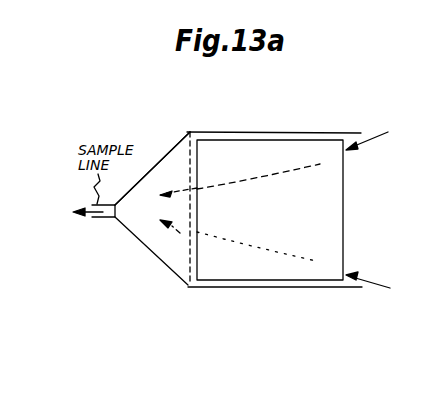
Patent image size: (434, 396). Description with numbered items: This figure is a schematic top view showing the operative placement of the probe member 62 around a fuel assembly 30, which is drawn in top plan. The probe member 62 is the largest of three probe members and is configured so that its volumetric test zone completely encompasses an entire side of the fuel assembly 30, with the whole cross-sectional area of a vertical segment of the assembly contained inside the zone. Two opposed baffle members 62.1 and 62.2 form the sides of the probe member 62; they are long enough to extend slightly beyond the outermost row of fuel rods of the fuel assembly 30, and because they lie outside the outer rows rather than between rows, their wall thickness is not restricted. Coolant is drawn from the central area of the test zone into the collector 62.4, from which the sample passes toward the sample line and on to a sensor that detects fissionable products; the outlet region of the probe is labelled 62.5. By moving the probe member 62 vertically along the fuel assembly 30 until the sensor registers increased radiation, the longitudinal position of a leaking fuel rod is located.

The fuel assembly 30 is at (333, 258).
The probe member 62 is at (175, 274).
The baffle member 62.1 is at (342, 133).
The baffle member 62.2 is at (308, 289).
The collector 62.4 is at (170, 153).
The sample line outlet 62.5 is at (97, 219).